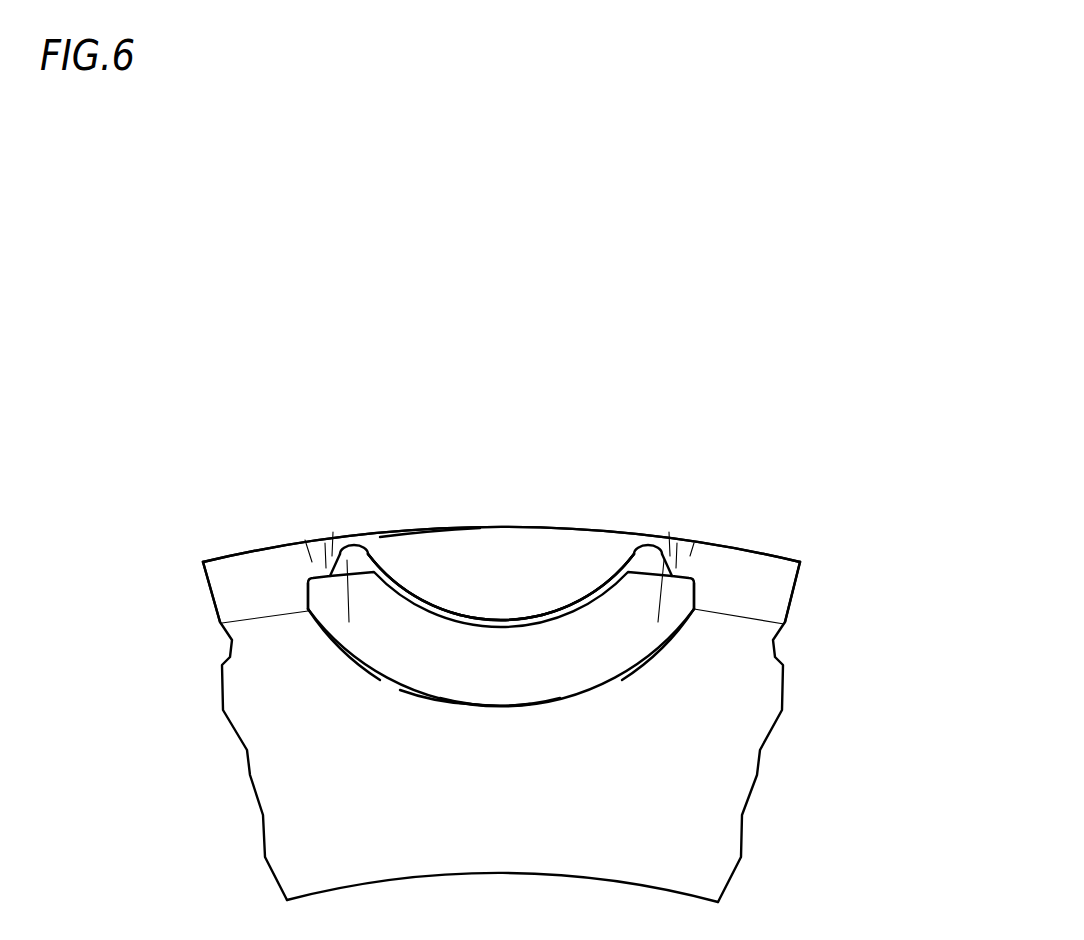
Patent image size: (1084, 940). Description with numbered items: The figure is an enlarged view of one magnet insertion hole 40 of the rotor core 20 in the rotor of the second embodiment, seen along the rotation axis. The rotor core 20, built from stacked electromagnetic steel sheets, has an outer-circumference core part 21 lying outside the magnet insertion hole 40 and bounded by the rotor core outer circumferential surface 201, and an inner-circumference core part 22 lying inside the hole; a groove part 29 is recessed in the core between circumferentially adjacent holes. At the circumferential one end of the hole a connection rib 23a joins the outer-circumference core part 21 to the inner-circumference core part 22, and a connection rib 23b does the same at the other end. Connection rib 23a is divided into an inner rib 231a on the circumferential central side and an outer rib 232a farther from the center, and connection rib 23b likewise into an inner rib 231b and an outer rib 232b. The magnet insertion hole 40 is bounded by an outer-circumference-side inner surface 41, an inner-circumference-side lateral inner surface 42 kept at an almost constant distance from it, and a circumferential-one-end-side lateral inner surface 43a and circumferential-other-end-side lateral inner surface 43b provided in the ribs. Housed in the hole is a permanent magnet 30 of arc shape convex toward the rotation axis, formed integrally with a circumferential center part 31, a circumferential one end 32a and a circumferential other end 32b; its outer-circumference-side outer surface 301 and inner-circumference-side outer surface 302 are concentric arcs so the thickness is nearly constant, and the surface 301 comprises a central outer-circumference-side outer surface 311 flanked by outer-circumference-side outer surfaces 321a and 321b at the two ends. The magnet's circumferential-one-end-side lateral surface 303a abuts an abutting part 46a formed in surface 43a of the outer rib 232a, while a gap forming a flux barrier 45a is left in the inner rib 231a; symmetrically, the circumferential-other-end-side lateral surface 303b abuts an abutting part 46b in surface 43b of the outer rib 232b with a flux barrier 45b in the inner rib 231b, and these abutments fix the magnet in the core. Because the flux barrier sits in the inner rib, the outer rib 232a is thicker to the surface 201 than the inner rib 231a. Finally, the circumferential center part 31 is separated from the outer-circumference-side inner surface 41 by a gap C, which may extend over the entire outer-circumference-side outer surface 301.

The rotor core 20 is at (693, 345).
The outer-circumference core part 21 is at (483, 541).
The rotor core outer circumferential surface 201 is at (433, 527).
The inner-circumference core part 22 is at (714, 866).
The connection rib 23a is at (812, 463).
The connection rib 23b is at (358, 463).
The inner rib 231a is at (664, 560).
The inner rib 231b is at (347, 560).
The outer rib 232a is at (694, 543).
The outer rib 232b is at (305, 540).
The groove part 29 is at (206, 594).
The permanent magnet 30 is at (517, 707).
The outer-circumference-side outer surface 301 is at (410, 543).
The inner-circumference-side outer surface 302 is at (553, 703).
The circumferential-one-end-side lateral surface 303a is at (657, 572).
The circumferential-other-end-side lateral surface 303b is at (347, 607).
The outer-circumference-side outer surface 311 is at (517, 612).
The outer-circumference-side outer surface 321a is at (566, 605).
The outer-circumference-side outer surface 321b is at (442, 580).
The circumferential center part 31 is at (487, 686).
The circumferential one end 32a is at (688, 580).
The circumferential other end 32b is at (314, 580).
The magnet insertion hole 40 is at (400, 626).
The outer-circumference-side inner surface 41 is at (471, 622).
The inner-circumference-side lateral inner surface 42 is at (448, 696).
The circumferential-one-end-side lateral inner surface 43a is at (665, 577).
The circumferential-other-end-side lateral inner surface 43b is at (343, 576).
The flux barrier 45a is at (650, 549).
The flux barrier 45b is at (366, 548).
The abutting part 46a is at (784, 624).
The abutting part 46b is at (222, 623).
The gap C is at (503, 593).